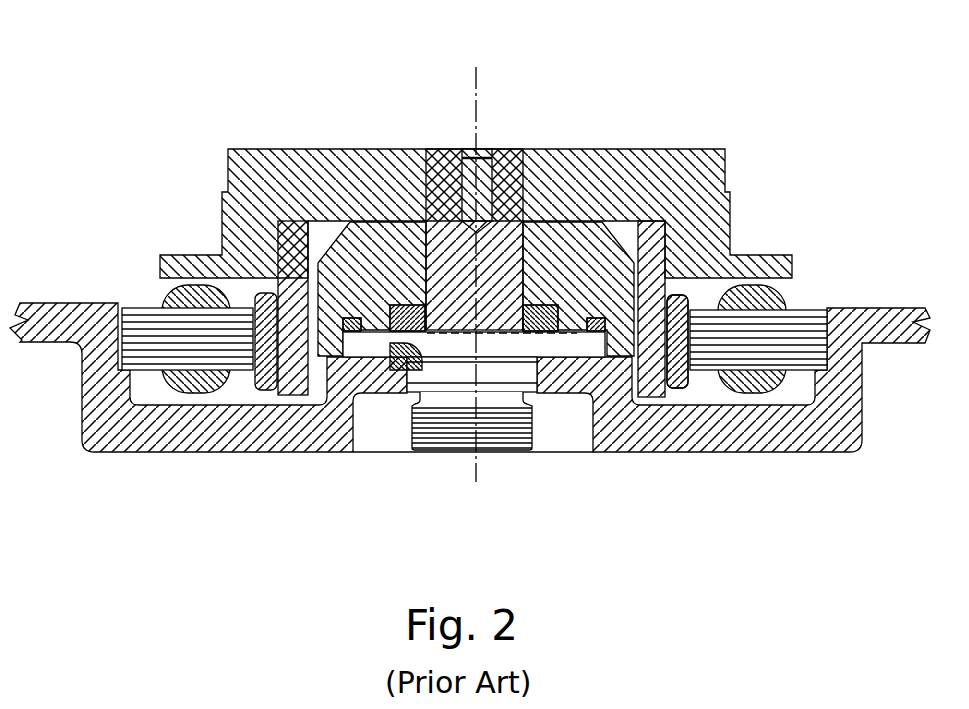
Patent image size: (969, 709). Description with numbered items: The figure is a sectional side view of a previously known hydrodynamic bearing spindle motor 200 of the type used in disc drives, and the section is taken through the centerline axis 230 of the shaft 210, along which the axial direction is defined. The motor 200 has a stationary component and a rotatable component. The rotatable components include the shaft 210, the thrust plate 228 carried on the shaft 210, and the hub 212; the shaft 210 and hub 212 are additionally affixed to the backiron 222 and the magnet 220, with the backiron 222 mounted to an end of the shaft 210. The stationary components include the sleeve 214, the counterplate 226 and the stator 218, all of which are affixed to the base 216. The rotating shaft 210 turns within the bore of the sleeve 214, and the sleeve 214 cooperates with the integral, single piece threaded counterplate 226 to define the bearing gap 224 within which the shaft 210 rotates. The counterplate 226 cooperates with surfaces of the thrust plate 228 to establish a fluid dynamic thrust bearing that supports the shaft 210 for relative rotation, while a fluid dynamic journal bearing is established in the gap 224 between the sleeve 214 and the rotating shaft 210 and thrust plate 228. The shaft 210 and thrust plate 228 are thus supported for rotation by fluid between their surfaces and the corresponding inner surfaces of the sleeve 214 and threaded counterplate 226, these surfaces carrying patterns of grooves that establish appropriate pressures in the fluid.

The hydrodynamic bearing spindle motor 200 is at (333, 98).
The shaft 210 is at (493, 272).
The hub 212 is at (548, 149).
The sleeve 214 is at (590, 270).
The base 216 is at (795, 437).
The stator 218 is at (793, 337).
The magnet 220 is at (682, 382).
The backiron 222 is at (668, 272).
The bearing gap 224 is at (530, 253).
The counterplate 226 is at (570, 343).
The thrust plate 228 is at (543, 333).
The axis 230 is at (476, 100).